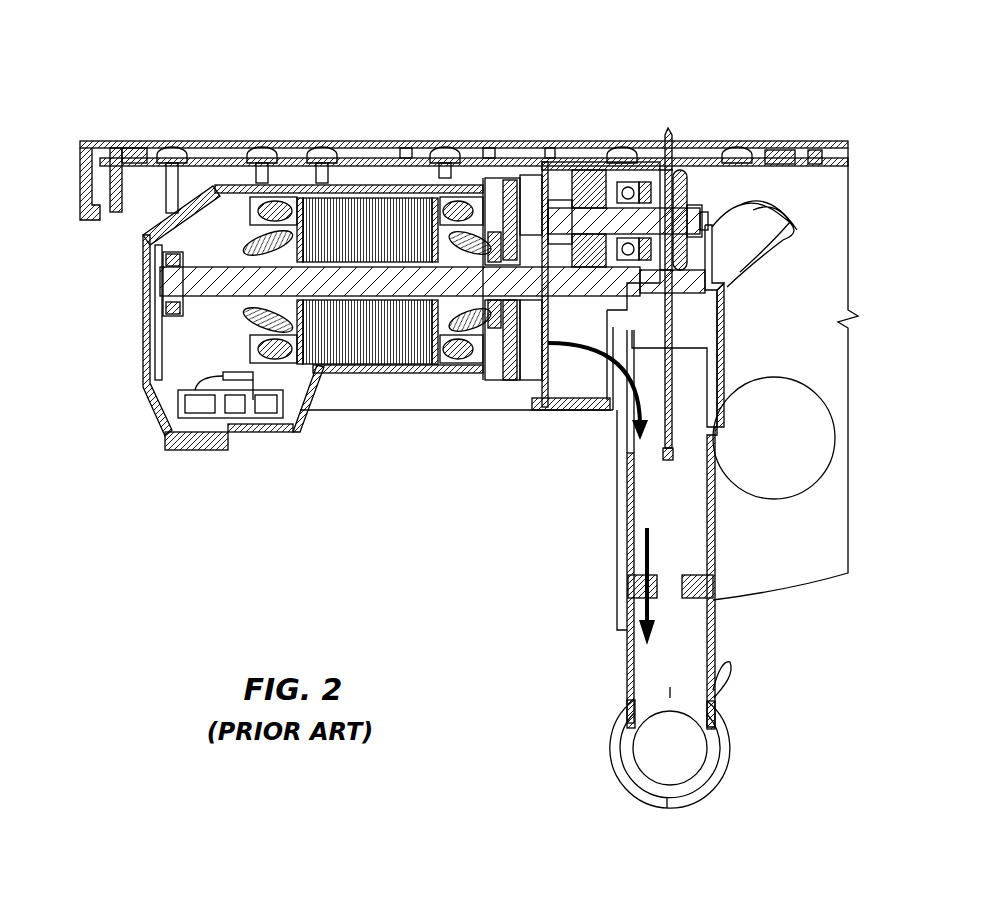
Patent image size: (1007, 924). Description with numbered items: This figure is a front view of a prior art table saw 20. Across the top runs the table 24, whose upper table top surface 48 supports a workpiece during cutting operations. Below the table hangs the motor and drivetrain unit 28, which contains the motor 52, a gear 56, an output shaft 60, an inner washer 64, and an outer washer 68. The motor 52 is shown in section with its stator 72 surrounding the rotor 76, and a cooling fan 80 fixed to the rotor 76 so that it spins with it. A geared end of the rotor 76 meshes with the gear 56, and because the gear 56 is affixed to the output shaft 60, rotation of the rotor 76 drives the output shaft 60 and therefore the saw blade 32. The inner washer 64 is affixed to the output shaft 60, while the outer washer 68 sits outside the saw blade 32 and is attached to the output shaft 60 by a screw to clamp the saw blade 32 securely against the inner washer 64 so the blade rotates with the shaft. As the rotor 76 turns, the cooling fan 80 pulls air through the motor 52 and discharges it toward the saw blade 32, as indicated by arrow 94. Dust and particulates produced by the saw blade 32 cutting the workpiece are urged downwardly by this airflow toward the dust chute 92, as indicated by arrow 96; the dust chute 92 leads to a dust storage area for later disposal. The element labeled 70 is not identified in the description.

The table saw 20 is at (766, 76).
The table 24 is at (476, 180).
The motor and drivetrain unit 28 is at (346, 452).
The saw blade 32 is at (672, 340).
The upper table top surface 48 is at (233, 132).
The motor 52 is at (120, 304).
The gear 56 is at (590, 170).
The output shaft 60 is at (560, 222).
The inner washer 64 is at (652, 180).
The outer washer 68 is at (690, 183).
The circuit board 70 is at (153, 394).
The stator 72 is at (375, 238).
The rotor 76 is at (388, 283).
The cooling fan 80 is at (500, 363).
The dust chute 92 is at (664, 752).
The arrow 94 is at (637, 405).
The arrow 96 is at (636, 588).